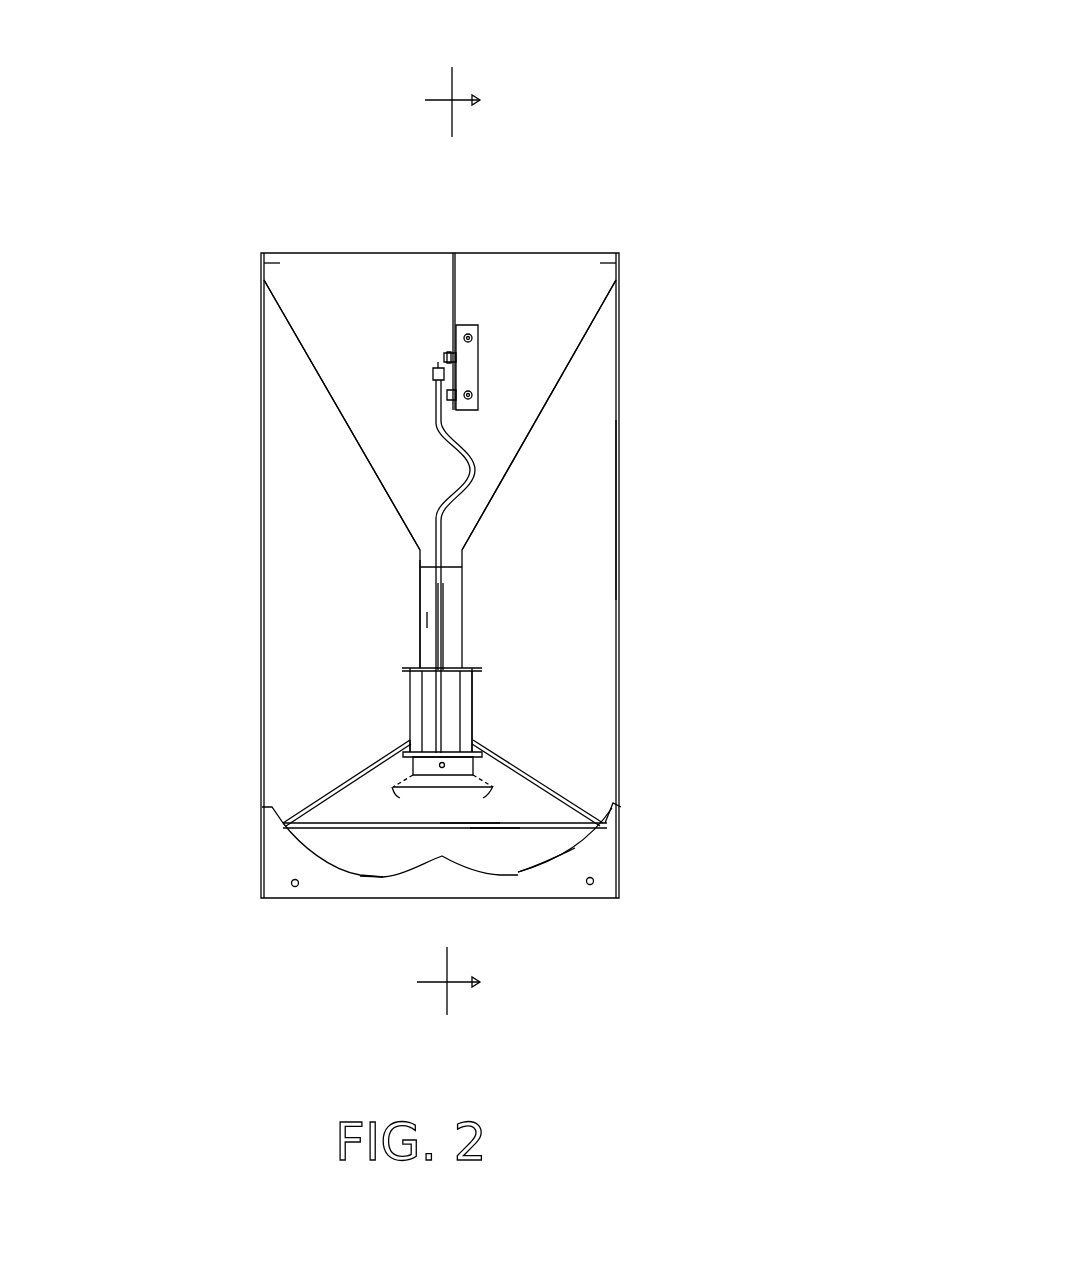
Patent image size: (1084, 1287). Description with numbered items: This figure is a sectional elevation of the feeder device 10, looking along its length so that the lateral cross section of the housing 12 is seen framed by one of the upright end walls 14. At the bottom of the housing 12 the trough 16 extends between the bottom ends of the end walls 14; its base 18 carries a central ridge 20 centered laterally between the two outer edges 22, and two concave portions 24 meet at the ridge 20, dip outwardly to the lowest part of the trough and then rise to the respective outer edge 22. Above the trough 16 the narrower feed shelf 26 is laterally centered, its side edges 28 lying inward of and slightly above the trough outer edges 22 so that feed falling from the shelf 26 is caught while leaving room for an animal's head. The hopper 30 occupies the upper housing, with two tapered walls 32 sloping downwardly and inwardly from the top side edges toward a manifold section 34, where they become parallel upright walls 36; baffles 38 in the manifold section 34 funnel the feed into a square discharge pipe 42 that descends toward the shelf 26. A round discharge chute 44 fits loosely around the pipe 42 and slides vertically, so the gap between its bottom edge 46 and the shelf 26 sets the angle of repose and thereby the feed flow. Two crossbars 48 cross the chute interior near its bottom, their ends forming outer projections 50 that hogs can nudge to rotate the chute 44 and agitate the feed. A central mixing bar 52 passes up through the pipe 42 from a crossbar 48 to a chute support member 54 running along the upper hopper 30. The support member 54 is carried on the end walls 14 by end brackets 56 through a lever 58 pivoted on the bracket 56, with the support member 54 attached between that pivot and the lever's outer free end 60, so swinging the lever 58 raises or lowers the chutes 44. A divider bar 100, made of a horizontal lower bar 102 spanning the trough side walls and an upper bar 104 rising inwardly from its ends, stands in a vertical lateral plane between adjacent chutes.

The device 10 is at (126, 171).
The housing 12 is at (620, 405).
The end wall 14 is at (582, 500).
The trough 16 is at (537, 879).
The base 18 is at (378, 878).
The central ridge 20 is at (442, 858).
The outer edge 22 is at (614, 804).
The concave portion 24 is at (557, 842).
The feed shelf 26 is at (453, 788).
The side edge 28 is at (540, 785).
The hopper 30 is at (283, 370).
The tapered wall 32 is at (347, 422).
The manifold section 34 is at (377, 613).
The upright wall 36 is at (420, 587).
The baffle 38 is at (427, 620).
The discharge pipe 42 is at (463, 692).
The discharge chute 44 is at (475, 720).
The bottom edge 46 is at (473, 772).
The crossbar 48 is at (412, 762).
The outer projection 50 is at (410, 744).
The central mixing bar 52 is at (443, 583).
The chute support member 54 is at (430, 373).
The end bracket 56 is at (476, 350).
The lever 58 is at (455, 297).
The outer free end 60 is at (453, 255).
The divider bar 100 is at (470, 829).
The lower bar 102 is at (495, 828).
The upper bar 104 is at (493, 787).